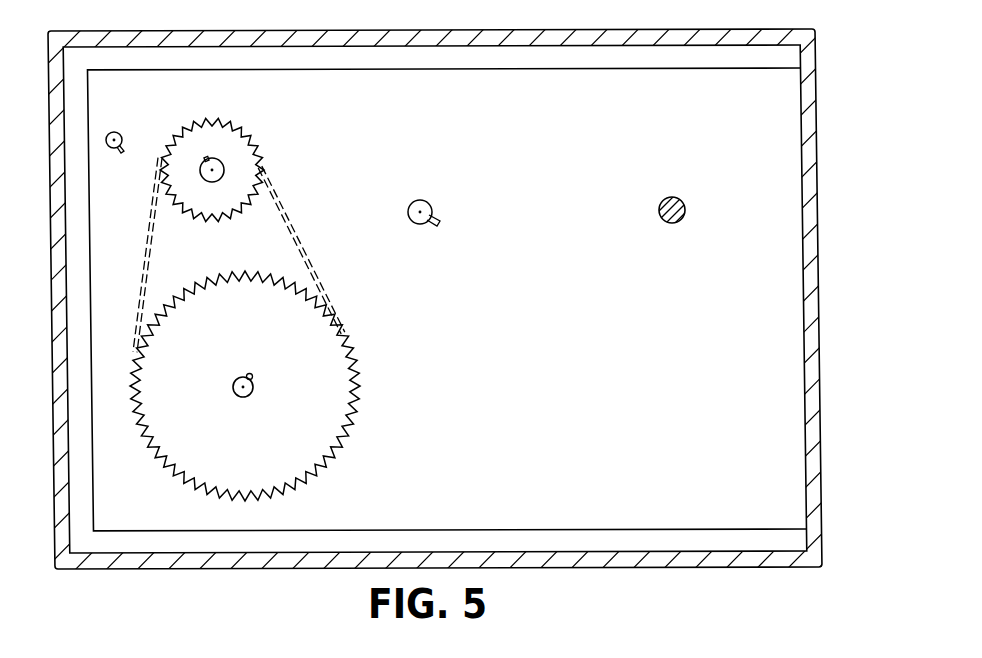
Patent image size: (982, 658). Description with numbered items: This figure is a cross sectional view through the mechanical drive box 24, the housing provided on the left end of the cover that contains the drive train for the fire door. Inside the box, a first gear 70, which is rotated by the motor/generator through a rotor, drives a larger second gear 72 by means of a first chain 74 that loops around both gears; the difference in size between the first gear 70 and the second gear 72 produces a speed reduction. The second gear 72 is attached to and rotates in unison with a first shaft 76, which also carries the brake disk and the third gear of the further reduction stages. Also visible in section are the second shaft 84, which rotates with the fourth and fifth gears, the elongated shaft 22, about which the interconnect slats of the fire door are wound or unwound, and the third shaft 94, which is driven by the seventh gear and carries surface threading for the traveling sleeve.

The elongated shaft 22 is at (672, 197).
The mechanical drive box 24 is at (743, 32).
The first gear 70 is at (242, 161).
The second gear 72 is at (258, 450).
The first chain 74 is at (291, 228).
The first shaft 76 is at (237, 379).
The second shaft 84 is at (431, 198).
The third shaft 94 is at (118, 133).